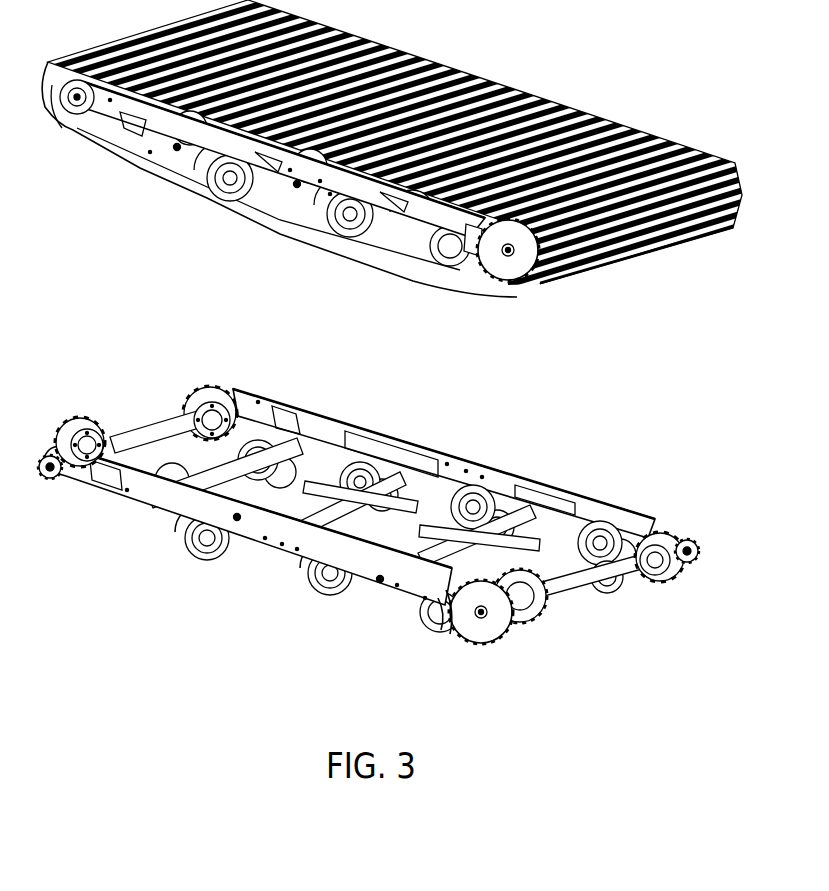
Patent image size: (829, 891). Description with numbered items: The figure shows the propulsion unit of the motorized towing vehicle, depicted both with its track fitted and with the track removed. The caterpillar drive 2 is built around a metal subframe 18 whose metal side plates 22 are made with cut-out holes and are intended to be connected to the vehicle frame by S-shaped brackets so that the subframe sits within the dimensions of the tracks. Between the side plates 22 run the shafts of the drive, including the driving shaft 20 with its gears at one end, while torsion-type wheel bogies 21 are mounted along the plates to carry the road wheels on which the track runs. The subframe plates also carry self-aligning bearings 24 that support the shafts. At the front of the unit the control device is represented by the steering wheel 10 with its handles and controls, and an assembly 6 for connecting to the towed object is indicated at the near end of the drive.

The caterpillar drive 2 is at (648, 243).
The assembly for connecting to the towed object 6 is at (63, 480).
The steering wheel 10 is at (152, 428).
The metal subframe 18 is at (610, 505).
The driving shaft 20 is at (594, 592).
The torsion-type wheel bogies 21 is at (493, 467).
The metal side plates of the subframe 22 is at (262, 545).
The self-aligning bearings 24 is at (696, 570).